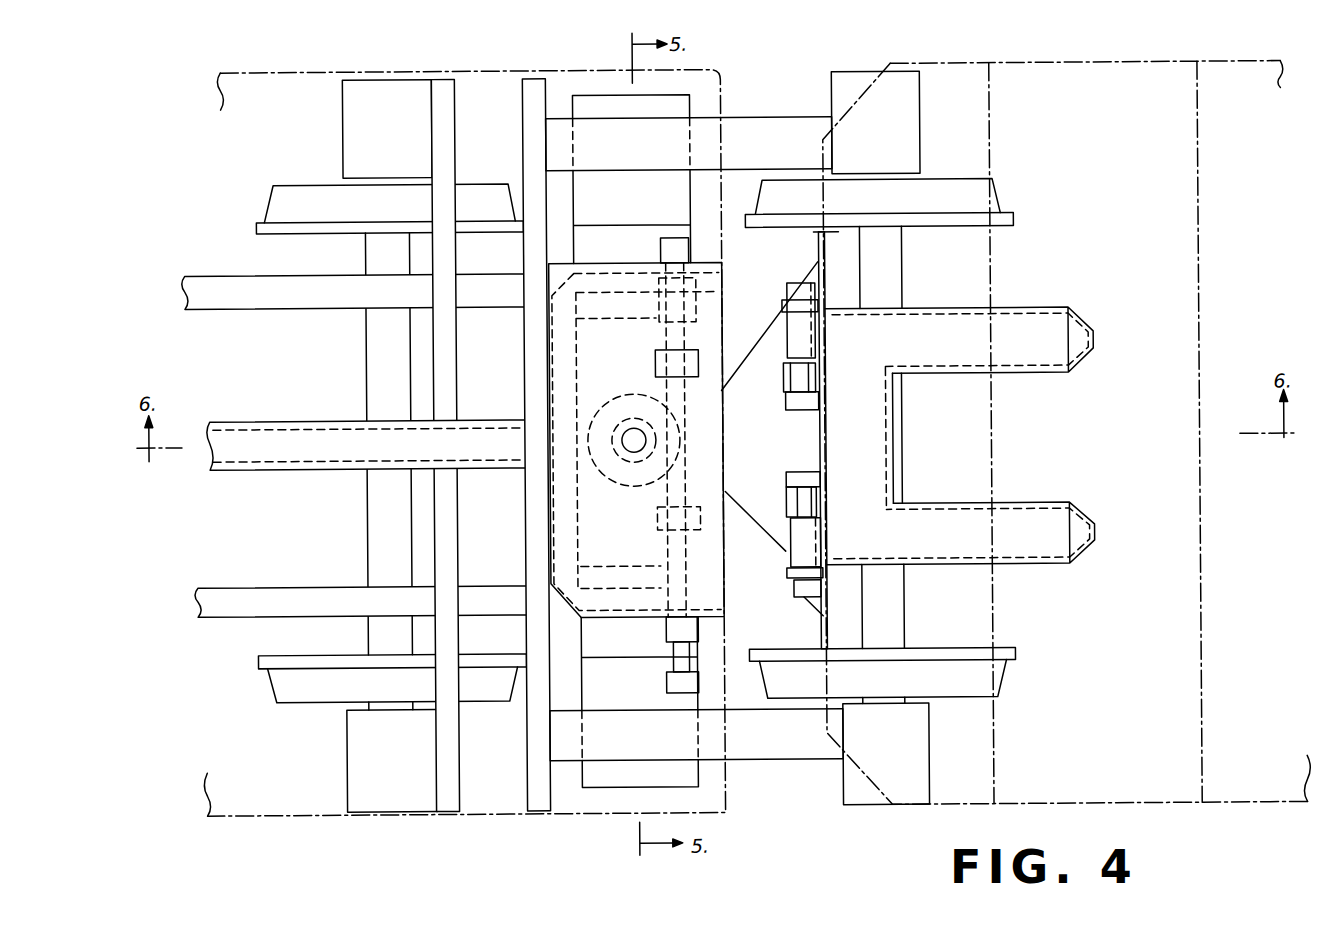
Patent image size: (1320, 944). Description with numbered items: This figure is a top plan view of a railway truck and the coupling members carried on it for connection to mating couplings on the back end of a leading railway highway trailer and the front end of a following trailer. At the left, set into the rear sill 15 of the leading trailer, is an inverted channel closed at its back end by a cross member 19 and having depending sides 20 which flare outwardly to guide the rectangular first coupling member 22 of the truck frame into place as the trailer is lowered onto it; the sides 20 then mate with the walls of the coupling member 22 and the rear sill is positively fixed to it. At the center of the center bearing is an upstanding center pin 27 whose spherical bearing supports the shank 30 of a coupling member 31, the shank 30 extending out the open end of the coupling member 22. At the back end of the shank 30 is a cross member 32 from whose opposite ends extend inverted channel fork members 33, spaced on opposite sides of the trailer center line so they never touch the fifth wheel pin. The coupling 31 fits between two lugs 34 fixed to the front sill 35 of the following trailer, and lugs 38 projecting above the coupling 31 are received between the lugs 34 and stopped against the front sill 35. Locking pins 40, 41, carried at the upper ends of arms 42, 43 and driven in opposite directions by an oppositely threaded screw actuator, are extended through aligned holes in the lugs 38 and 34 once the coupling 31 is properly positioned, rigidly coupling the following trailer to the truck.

The rear sill 15 is at (725, 100).
The cross member 19 is at (530, 86).
The depending sides 20 is at (601, 263).
The first coupling member 22 is at (565, 320).
The center pin 27 is at (630, 486).
The shank 30 is at (707, 393).
The coupling member 31 is at (756, 347).
The cross member 32 is at (876, 430).
The fork members 33 is at (947, 308).
The lugs 34 is at (787, 286).
The front sill 35 is at (820, 233).
The lugs 38 is at (802, 343).
The locking pin 40 is at (792, 378).
The locking pin 41 is at (800, 500).
The arm 42 is at (787, 401).
The arm 43 is at (786, 478).